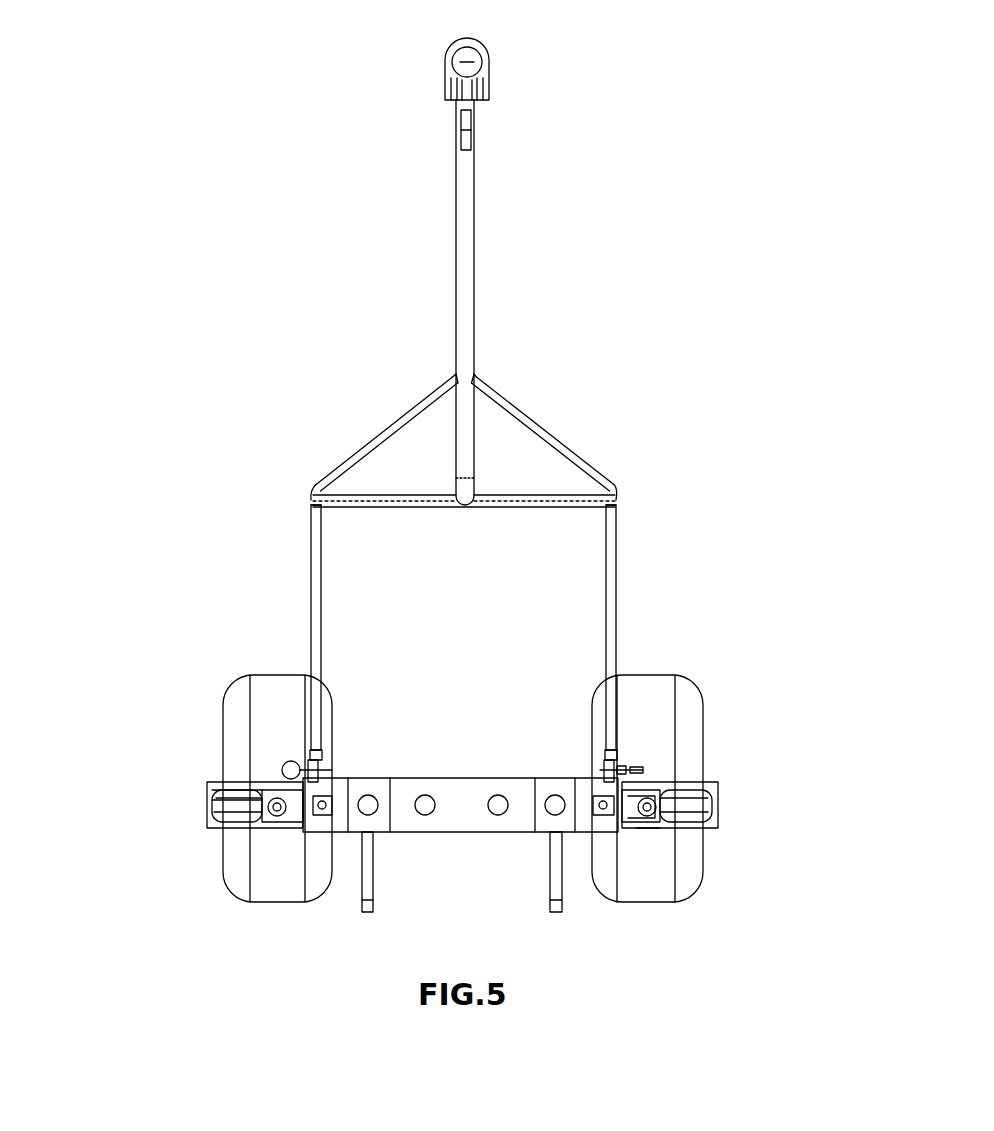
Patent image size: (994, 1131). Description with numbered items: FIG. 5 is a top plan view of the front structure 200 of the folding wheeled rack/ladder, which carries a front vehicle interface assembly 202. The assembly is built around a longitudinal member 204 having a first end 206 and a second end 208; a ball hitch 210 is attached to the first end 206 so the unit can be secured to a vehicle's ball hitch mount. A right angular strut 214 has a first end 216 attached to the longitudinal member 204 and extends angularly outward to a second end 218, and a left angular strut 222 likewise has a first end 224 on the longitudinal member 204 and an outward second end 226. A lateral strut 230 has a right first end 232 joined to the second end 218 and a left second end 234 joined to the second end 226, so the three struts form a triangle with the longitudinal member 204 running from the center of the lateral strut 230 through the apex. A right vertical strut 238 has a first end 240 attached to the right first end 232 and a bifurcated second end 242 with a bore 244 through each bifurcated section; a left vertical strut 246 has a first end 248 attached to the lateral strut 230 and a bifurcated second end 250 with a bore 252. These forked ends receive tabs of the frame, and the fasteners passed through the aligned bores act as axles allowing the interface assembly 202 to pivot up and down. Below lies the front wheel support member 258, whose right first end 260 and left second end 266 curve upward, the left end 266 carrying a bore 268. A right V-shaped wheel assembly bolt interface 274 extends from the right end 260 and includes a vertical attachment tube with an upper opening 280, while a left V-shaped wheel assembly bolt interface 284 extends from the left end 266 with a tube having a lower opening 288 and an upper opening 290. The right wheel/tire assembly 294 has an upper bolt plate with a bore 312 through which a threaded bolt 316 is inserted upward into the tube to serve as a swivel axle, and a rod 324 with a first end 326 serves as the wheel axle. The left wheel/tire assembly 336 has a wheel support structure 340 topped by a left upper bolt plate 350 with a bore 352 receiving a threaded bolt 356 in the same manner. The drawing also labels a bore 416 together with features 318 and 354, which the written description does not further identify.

The front structure 200 is at (312, 265).
The front vehicle interface assembly 202 is at (549, 302).
The longitudinal member 204 is at (477, 236).
The first end 206 is at (478, 108).
The second end 208 is at (473, 493).
The ball hitch 210 is at (480, 44).
The right angular strut 214 is at (537, 420).
The first end 216 is at (476, 378).
The second end 218 is at (610, 484).
The left angular strut 222 is at (415, 412).
The first end 224 is at (455, 374).
The second end 226 is at (318, 490).
The lateral strut 230 is at (432, 497).
The right first end 232 is at (580, 507).
The left second end 234 is at (330, 508).
The right vertical strut 238 is at (617, 568).
The first end 240 is at (617, 500).
The bifurcated second end 242 is at (618, 745).
The bore 244 is at (618, 765).
The left vertical strut 246 is at (311, 580).
The first end 248 is at (311, 505).
The bifurcated second end 250 is at (313, 768).
The bore 252 is at (289, 764).
The front wheel support member 258 is at (455, 800).
The right first end 260 is at (598, 790).
The left second end 266 is at (335, 780).
The bore 268 is at (628, 770).
The right V-shaped wheel assembly bolt interface 274 is at (650, 826).
The upper opening 280 is at (650, 830).
The left V-shaped wheel assembly bolt interface 284 is at (279, 818).
The lower opening 288 is at (695, 855).
The upper opening 290 is at (277, 815).
The right wheel/tire assembly 294 is at (760, 785).
The bore 312 is at (660, 805).
The threaded bolt 316 is at (183, 814).
The left clamp plate 318 is at (275, 812).
The rod 324 is at (756, 790).
The first end 326 is at (718, 783).
The left wheel/tire assembly 336 is at (180, 765).
The wheel support structure 340 is at (702, 840).
The left upper bolt plate 350 is at (152, 794).
The bore 352 is at (262, 792).
The right support leg 354 is at (566, 905).
The threaded bolt 356 is at (370, 905).
The left bore 416 is at (243, 781).